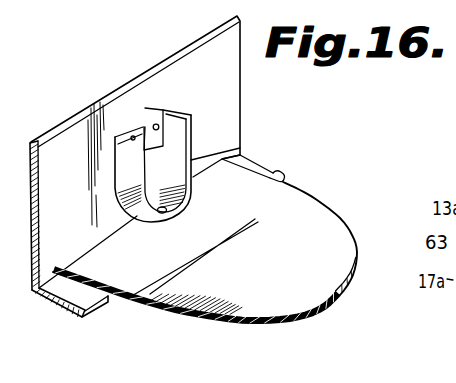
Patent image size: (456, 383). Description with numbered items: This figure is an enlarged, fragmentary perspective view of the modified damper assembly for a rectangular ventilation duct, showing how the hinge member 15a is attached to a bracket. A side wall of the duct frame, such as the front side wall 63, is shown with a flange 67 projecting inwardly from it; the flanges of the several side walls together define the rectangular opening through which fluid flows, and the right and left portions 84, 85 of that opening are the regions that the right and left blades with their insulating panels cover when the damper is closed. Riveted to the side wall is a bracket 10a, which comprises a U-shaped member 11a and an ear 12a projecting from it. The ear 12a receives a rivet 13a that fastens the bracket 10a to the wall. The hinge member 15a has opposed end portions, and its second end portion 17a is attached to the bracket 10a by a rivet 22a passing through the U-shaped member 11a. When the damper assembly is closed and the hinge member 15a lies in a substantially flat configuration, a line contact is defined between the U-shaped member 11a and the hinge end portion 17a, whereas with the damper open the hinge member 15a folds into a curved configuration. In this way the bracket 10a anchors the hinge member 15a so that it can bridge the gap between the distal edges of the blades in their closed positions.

The second bracket 10a is at (173, 157).
The U-shaped member 11a is at (241, 143).
The ear 12a is at (144, 116).
The rivet 13a is at (158, 130).
The hinge member 15a is at (309, 314).
The second end portion 17a is at (84, 251).
The rivet 22a is at (165, 211).
The front side wall 63 is at (44, 197).
The flange 67 is at (73, 297).
The right portion of opening 84 is at (98, 303).
The left portion of opening 85 is at (285, 177).